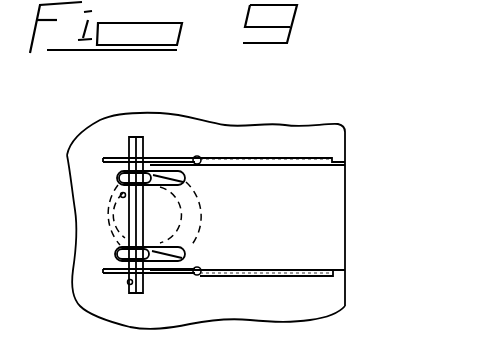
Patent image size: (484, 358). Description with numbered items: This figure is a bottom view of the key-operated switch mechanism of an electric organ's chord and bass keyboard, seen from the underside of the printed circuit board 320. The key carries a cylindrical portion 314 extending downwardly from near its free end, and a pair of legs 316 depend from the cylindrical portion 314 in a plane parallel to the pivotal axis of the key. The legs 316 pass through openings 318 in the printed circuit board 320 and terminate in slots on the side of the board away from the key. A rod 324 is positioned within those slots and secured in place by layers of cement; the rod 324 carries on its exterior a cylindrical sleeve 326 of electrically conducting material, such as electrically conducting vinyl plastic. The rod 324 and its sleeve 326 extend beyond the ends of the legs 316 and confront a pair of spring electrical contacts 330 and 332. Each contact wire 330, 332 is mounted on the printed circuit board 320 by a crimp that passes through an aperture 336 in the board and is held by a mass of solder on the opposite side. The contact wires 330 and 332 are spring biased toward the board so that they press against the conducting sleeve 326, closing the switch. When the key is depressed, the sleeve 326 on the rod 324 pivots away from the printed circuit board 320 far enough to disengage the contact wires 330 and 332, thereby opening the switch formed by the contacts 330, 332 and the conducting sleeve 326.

The cylindrical portion 314 is at (203, 215).
The legs 316 is at (150, 172).
The openings 318 is at (120, 175).
The printed circuit board 320 is at (332, 222).
The rod 324 is at (123, 194).
The cylindrical sleeve 326 is at (130, 281).
The spring electrical contact 330 is at (255, 274).
The spring electrical contact 332 is at (290, 163).
The aperture 336 is at (199, 157).